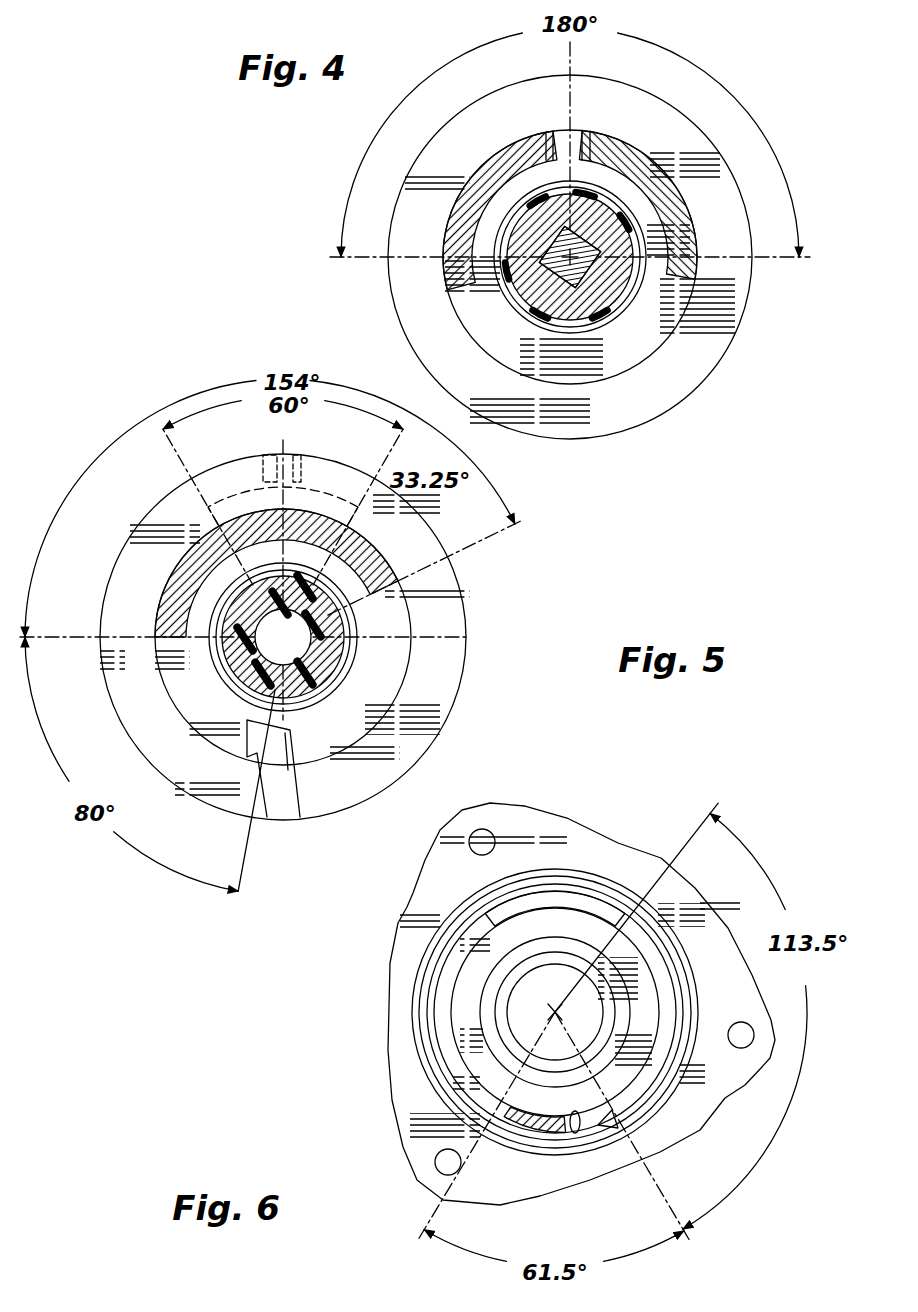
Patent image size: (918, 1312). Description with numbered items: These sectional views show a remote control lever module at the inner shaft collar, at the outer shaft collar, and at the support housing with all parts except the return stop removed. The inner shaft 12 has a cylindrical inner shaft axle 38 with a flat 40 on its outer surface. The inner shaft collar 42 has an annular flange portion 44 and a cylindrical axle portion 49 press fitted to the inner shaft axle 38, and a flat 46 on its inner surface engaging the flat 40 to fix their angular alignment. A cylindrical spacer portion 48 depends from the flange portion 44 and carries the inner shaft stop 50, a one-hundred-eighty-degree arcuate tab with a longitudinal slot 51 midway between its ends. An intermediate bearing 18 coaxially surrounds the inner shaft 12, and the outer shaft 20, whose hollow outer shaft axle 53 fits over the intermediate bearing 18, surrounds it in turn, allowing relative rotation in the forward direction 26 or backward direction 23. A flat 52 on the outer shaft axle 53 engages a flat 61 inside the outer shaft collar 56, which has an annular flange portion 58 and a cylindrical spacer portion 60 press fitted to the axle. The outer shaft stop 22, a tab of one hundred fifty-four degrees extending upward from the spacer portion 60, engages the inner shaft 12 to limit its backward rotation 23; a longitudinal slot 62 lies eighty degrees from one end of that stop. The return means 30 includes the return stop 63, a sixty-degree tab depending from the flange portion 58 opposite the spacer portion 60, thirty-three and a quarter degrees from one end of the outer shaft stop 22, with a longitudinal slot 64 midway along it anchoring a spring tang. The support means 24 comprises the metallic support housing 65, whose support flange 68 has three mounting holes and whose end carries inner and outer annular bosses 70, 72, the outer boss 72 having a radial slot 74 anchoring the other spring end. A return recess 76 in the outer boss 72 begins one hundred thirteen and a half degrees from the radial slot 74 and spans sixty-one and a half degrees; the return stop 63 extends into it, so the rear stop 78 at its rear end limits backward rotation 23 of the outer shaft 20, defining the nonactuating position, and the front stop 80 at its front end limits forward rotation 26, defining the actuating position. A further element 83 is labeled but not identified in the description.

In FIG. 4, the inner shaft 12 is at (640, 300).
In FIG. 5, the intermediate bearing 18 is at (352, 650).
In FIG. 5, the outer shaft 20 is at (364, 658).
In FIG. 5, the outer shaft stop 22 is at (375, 566).
In FIG. 4, the backward rotation 23 is at (343, 285).
In FIG. 5, the backward rotation 23 is at (522, 578).
In FIG. 6, the backward rotation 23 is at (398, 1186).
In FIG. 6, the support means 24 is at (745, 948).
In FIG. 4, the forward rotation 26 is at (801, 285).
In FIG. 5, the forward rotation 26 is at (278, 886).
In FIG. 6, the forward rotation 26 is at (352, 1036).
In FIG. 5, the return means 30 is at (210, 458).
In FIG. 6, the return means 30 is at (585, 1125).
In FIG. 4, the inner shaft axle 38 is at (625, 296).
In FIG. 5, the inner shaft axle 38 is at (240, 678).
In FIG. 4, the flat 40 is at (547, 276).
In FIG. 4, the inner shaft collar 42 is at (712, 392).
In FIG. 4, the annular flange portion 44 is at (680, 400).
In FIG. 4, the flat 46 is at (496, 252).
In FIG. 5, the flat 46 is at (283, 637).
In FIG. 4, the cylindrical spacer portion 48 is at (636, 345).
In FIG. 4, the cylindrical axle portion 49 is at (575, 296).
In FIG. 4, the inner shaft stop 50 is at (506, 149).
In FIG. 4, the longitudinal slot 51 is at (566, 140).
In FIG. 5, the flat 52 is at (197, 716).
In FIG. 5, the outer shaft axle 53 is at (353, 627).
In FIG. 5, the outer shaft collar 56 is at (165, 487).
In FIG. 5, the annular flange portion 58 is at (352, 815).
In FIG. 5, the cylindrical spacer portion 60 is at (197, 712).
In FIG. 5, the flat 61 is at (293, 770).
In FIG. 5, the longitudinal slot 62 is at (262, 748).
In FIG. 5, the return stop 63 is at (333, 498).
In FIG. 6, the return stop 63 is at (617, 1105).
In FIG. 5, the longitudinal slot 64 is at (312, 470).
In FIG. 6, the longitudinal slot 64 is at (570, 1136).
In FIG. 6, the support housing 65 is at (422, 1058).
In FIG. 6, the support flange 68 is at (630, 865).
In FIG. 6, the inner annular boss 70 is at (486, 981).
In FIG. 6, the outer annular boss 72 is at (658, 957).
In FIG. 6, the radial slot 74 is at (630, 907).
In FIG. 6, the return recess 76 is at (540, 1133).
In FIG. 6, the rear stop 78 is at (510, 1102).
In FIG. 6, the front stop 80 is at (608, 1110).
In FIG. 4, the seal segments 83 is at (622, 215).